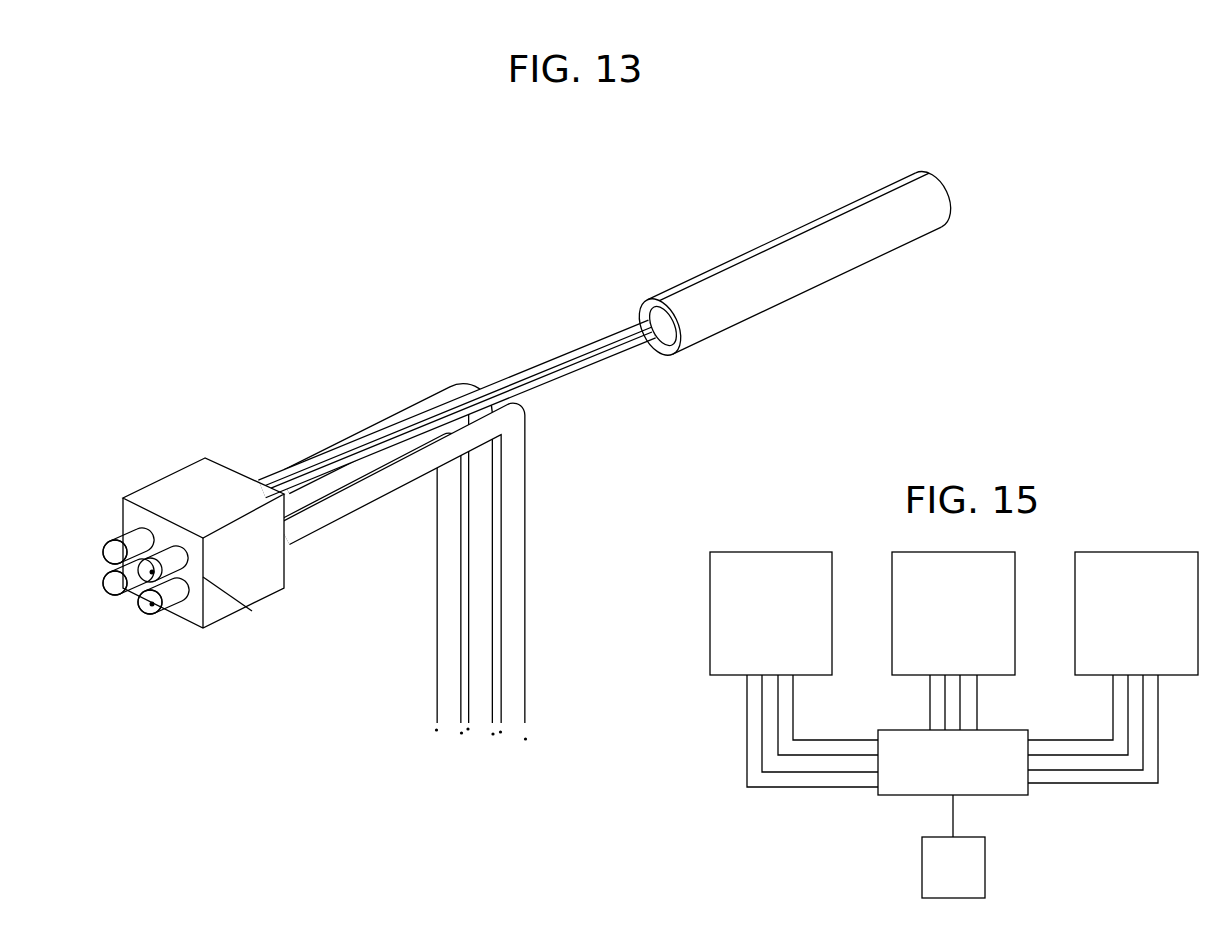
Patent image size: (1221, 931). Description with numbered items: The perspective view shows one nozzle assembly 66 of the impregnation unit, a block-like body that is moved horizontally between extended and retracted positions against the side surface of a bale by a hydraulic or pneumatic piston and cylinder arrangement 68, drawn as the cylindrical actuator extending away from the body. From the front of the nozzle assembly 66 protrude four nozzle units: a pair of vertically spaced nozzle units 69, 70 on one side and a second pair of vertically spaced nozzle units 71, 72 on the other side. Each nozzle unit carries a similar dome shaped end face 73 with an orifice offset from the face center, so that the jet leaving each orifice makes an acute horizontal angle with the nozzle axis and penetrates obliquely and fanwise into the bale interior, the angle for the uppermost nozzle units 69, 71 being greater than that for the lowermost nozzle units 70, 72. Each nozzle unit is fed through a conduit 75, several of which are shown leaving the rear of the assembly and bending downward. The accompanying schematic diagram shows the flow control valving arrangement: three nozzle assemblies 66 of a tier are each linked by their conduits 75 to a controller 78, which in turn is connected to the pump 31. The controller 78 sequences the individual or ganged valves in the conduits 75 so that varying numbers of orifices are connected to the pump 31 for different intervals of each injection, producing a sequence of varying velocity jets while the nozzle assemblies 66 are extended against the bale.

In FIG. 13, the nozzle assembly 66 is at (173, 447).
In FIG. 15, the nozzle assembly 66 is at (1152, 625).
In FIG. 13, the piston and cylinder arrangement 68 is at (778, 262).
In FIG. 13, the nozzle unit 69 is at (247, 602).
In FIG. 13, the nozzle unit 70 is at (168, 597).
In FIG. 13, the nozzle unit 71 is at (135, 542).
In FIG. 13, the nozzle unit 72 is at (125, 572).
In FIG. 13, the dome shaped end face 73 is at (112, 553).
In FIG. 15, the conduit 75 is at (1168, 737).
In FIG. 15, the controller 78 is at (932, 774).
In FIG. 15, the pump 31 is at (937, 887).